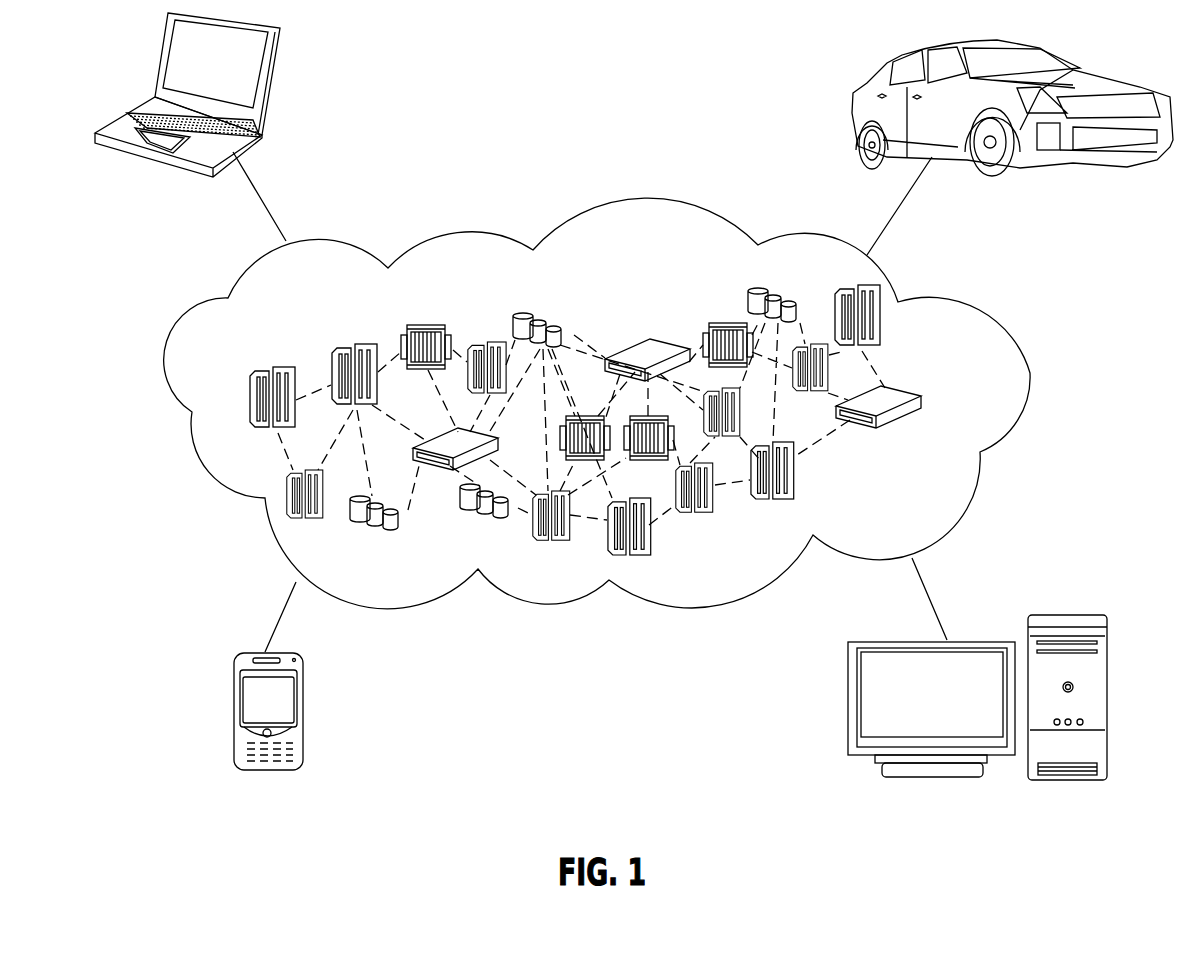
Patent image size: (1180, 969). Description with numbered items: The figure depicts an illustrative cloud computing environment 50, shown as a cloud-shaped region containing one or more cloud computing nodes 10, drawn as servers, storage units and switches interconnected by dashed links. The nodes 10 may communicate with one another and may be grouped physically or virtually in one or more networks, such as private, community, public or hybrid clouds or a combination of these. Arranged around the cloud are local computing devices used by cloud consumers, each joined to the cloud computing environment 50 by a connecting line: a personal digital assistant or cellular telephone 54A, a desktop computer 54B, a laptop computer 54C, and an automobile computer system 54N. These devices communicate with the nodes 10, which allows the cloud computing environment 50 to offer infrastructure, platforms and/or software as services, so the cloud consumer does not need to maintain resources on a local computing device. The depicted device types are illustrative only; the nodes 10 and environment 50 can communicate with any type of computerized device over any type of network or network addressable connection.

The cloud computing nodes 10 is at (634, 396).
The cloud computing environment 50 is at (988, 315).
The personal digital assistant (PDA) or cellular telephone 54A is at (232, 717).
The desktop computer 54B is at (1072, 613).
The laptop computer 54C is at (277, 78).
The automobile computer system 54N is at (860, 87).